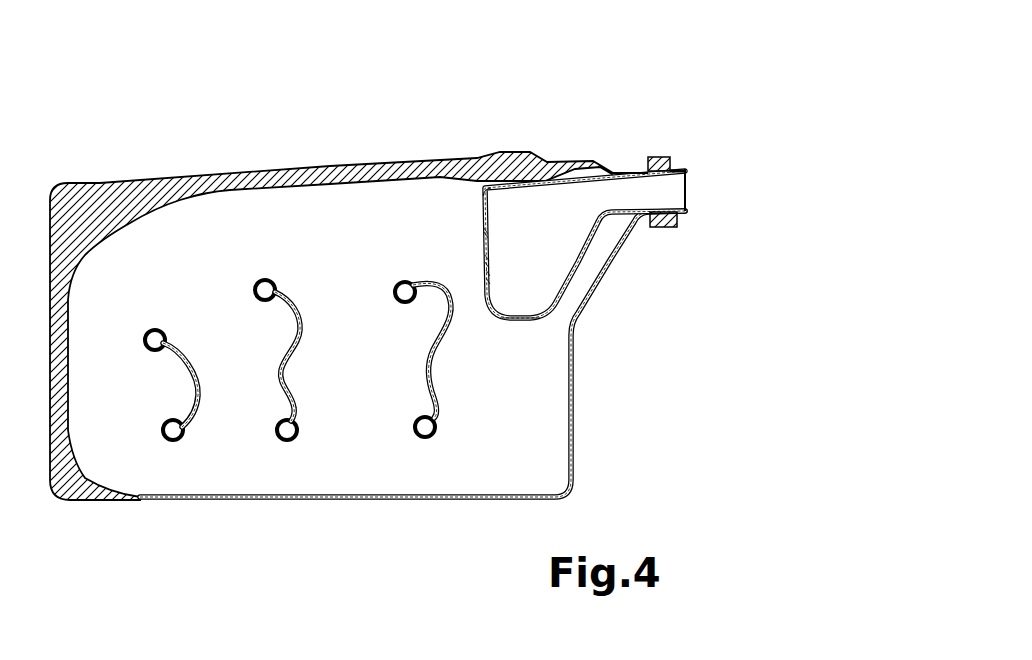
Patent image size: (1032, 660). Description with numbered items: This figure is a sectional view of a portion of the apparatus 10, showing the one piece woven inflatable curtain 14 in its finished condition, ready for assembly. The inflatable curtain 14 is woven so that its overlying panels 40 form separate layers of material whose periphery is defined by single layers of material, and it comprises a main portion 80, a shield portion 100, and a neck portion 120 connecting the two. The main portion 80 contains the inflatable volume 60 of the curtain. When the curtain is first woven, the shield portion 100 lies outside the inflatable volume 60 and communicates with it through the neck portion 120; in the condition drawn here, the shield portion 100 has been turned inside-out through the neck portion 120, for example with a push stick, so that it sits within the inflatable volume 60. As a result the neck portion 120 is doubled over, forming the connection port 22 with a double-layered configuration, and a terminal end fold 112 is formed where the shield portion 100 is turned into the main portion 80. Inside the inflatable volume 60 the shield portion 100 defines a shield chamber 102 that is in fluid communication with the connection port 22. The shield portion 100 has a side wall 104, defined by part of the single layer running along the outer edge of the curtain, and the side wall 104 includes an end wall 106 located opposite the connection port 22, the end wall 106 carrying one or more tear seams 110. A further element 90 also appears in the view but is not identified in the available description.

The structural assembly 10 is at (417, 293).
The inflatable curtain 14 is at (698, 172).
The connection port 22 is at (690, 191).
The overlying panels 40 is at (533, 458).
The inflatable volume 60 is at (277, 217).
The main portion 80 is at (348, 454).
The outer shell 90 is at (188, 166).
The shield portion 100 is at (543, 257).
The shield chamber 102 is at (500, 157).
The side wall 104 is at (517, 320).
The end wall 106 is at (483, 192).
The tear seams 110 is at (478, 283).
The terminal end fold 112 is at (687, 208).
The neck portion 120 is at (665, 187).